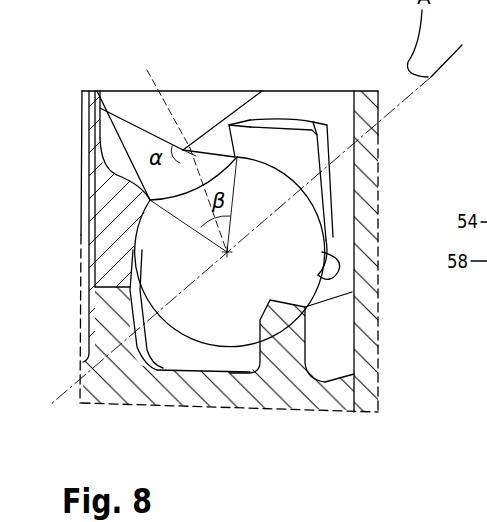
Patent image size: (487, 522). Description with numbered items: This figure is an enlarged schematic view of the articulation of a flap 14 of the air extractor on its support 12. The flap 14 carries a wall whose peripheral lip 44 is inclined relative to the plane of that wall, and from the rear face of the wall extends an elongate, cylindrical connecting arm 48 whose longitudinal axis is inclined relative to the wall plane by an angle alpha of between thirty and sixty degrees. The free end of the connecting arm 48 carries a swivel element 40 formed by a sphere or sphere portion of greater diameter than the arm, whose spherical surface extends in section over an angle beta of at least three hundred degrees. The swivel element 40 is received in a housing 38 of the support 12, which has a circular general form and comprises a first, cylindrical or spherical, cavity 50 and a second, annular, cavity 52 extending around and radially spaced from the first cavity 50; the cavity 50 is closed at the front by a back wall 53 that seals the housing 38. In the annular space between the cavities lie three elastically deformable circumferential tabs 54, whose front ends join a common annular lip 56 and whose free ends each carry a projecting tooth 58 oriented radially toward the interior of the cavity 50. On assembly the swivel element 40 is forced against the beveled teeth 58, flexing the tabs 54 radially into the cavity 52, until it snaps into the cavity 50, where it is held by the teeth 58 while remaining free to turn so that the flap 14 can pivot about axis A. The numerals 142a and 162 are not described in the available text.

The support 12 is at (358, 395).
The flap 14 is at (182, 112).
The housing 38 is at (140, 382).
The swivel element 40 is at (292, 242).
The peripheral lip 44 is at (221, 105).
The connecting arm 48 is at (277, 100).
The first cavity 50 is at (207, 377).
The second cavity 52 is at (333, 380).
The back wall 53 is at (138, 392).
The circumferential tab 54 is at (97, 122).
The annular lip 56 is at (330, 255).
The projecting tooth 58 is at (118, 207).
The locking element 142a is at (237, 521).
The guide element 162 is at (298, 521).